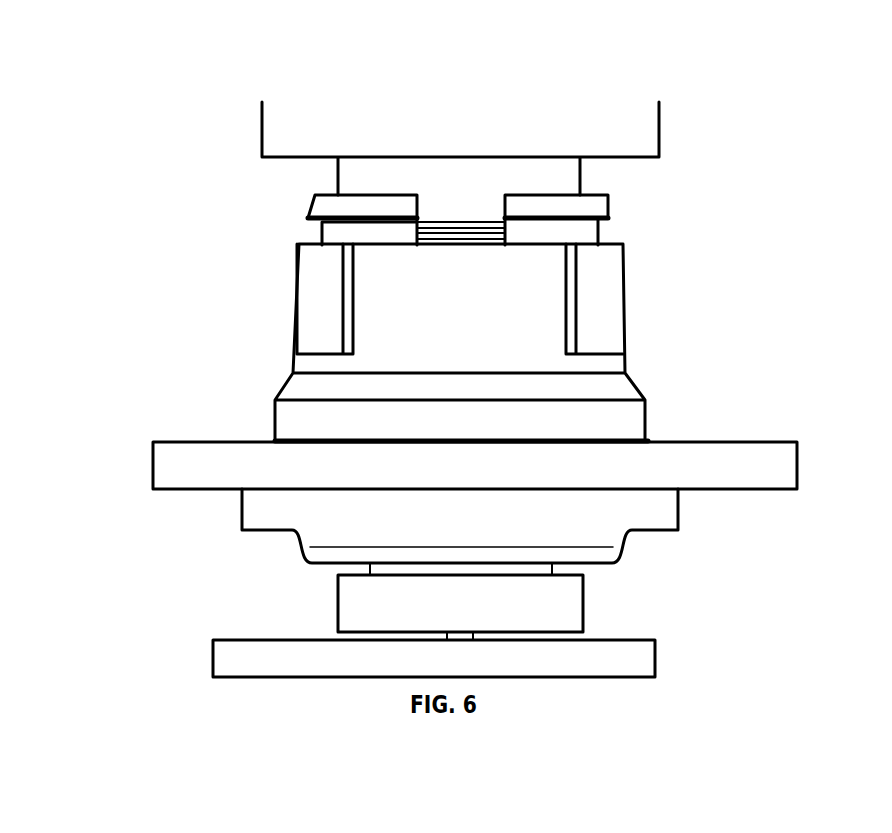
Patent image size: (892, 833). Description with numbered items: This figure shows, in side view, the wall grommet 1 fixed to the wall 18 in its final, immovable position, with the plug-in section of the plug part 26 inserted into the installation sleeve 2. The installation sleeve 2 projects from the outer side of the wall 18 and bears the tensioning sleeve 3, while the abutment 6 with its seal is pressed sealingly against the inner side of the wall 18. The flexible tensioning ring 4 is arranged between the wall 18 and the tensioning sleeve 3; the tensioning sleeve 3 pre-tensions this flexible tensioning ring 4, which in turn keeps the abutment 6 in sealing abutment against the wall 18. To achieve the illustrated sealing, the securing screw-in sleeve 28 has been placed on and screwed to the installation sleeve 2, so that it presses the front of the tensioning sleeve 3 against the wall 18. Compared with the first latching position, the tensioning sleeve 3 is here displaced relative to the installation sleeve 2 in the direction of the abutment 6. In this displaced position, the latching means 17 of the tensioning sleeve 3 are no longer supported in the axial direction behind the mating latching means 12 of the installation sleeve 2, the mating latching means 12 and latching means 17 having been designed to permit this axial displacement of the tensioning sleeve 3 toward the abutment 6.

The wall grommet 1 is at (112, 146).
The installation sleeve 2 is at (597, 207).
The tensioning sleeve 3 is at (627, 412).
The flexible tensioning ring 4 is at (260, 429).
The abutment 6 is at (256, 545).
The mating latching means 12 is at (323, 232).
The latching means 17 is at (605, 259).
The wall 18 is at (173, 462).
The plug part 26 is at (577, 603).
The securing screw-in sleeve 28 is at (625, 125).